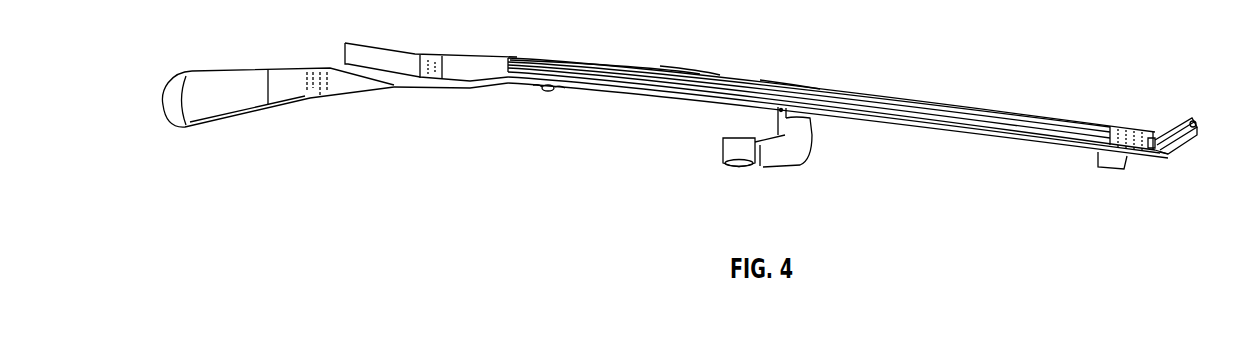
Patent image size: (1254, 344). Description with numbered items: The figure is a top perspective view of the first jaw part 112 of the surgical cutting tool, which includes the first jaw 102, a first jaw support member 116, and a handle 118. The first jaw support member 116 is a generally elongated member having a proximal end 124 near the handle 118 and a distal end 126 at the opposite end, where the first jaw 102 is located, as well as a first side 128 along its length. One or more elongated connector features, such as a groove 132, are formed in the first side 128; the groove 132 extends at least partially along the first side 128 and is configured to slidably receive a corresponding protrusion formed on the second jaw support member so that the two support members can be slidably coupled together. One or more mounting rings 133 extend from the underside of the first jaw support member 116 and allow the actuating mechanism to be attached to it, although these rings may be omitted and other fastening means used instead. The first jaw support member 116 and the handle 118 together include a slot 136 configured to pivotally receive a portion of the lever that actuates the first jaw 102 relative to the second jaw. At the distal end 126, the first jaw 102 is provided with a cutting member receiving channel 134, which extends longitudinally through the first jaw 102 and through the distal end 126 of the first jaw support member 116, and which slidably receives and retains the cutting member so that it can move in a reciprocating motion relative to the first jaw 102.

The first jaw 102 is at (1184, 144).
The first jaw part 112 is at (675, 64).
The first jaw support member 116 is at (786, 89).
The handle 118 is at (310, 100).
The proximal end 124 is at (523, 57).
The distal end 126 is at (1140, 138).
The first side 128 is at (907, 104).
The groove 132 is at (866, 96).
The mounting rings 133 is at (780, 113).
The cutting member receiving channel 134 is at (1192, 121).
The slot 136 is at (557, 66).